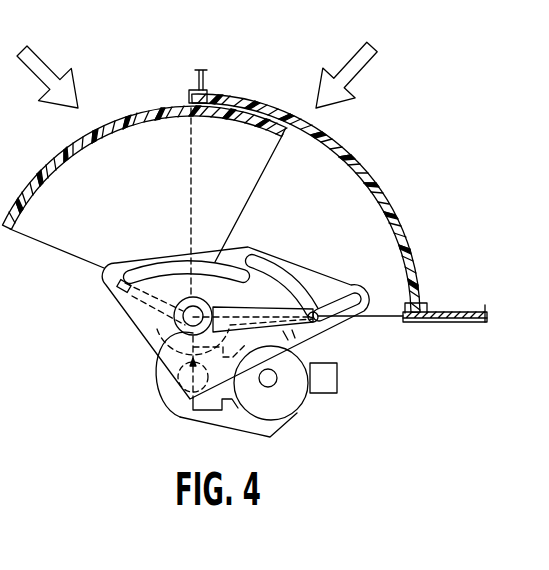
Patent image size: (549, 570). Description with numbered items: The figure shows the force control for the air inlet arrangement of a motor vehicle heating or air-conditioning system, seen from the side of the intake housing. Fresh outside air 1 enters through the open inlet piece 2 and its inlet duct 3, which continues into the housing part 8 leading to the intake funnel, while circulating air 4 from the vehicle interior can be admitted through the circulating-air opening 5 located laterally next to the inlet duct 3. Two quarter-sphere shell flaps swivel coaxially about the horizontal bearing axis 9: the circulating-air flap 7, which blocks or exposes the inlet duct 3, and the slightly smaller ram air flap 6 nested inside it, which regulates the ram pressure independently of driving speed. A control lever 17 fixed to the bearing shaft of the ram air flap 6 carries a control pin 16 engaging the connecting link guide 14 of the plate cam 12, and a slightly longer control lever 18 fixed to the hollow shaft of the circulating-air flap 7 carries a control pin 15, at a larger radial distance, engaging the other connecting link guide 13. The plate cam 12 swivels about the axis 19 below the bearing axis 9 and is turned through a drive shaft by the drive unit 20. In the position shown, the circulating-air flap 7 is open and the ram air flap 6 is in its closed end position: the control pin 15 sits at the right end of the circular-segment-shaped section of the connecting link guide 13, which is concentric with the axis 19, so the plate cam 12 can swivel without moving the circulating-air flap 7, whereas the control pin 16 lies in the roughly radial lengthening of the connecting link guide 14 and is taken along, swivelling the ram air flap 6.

The fresh outside air 1 is at (43, 62).
The inlet piece 2 is at (202, 86).
The inlet duct 3 is at (119, 109).
The circulating air 4 is at (362, 64).
The circulating-air opening 5 is at (420, 213).
The ram air flap 6 is at (75, 161).
The circulating-air flap 7 is at (366, 178).
The housing part 8 is at (454, 311).
The bearing axis 9 is at (152, 355).
The plate cam 12 is at (318, 280).
The connecting link guide 13 is at (278, 276).
The connecting link guide 14 is at (161, 269).
The control pin 15 is at (318, 323).
The control pin 16 is at (113, 298).
The control lever 17 is at (143, 322).
The control lever 18 is at (262, 304).
The axis 19 is at (175, 402).
The drive unit 20 is at (306, 419).